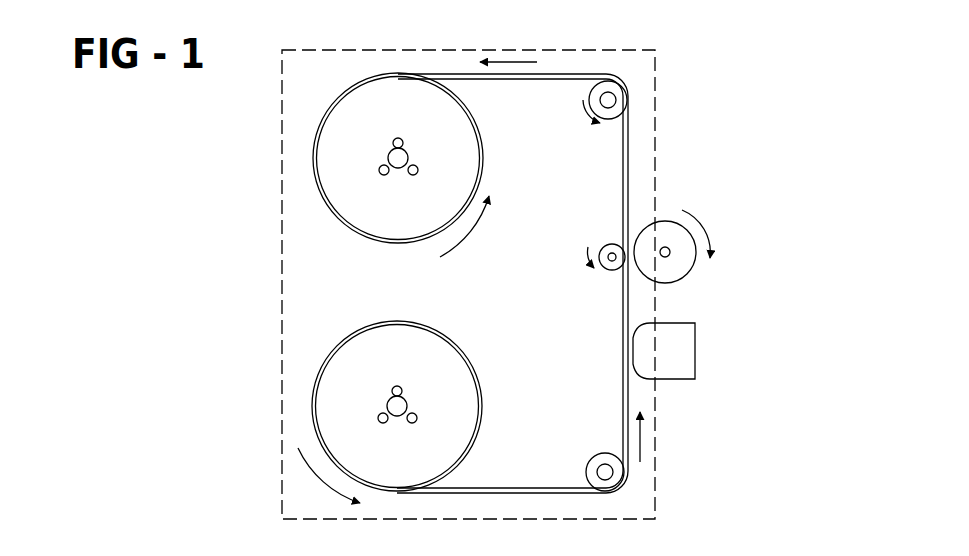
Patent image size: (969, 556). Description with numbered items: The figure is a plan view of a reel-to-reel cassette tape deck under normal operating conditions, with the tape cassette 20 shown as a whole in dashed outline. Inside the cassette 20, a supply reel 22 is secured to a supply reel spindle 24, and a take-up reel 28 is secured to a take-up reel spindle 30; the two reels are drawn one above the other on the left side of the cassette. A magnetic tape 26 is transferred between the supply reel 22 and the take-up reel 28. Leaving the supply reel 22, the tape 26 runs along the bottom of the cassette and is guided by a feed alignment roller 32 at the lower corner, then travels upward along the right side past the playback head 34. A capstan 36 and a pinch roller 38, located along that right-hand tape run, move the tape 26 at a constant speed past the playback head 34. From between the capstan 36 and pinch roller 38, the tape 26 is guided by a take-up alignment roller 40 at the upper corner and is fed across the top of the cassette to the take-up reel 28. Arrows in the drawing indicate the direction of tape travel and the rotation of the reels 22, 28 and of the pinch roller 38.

The tape cassette 20 is at (272, 200).
The supply reel 22 is at (346, 388).
The supply reel spindle 24 is at (397, 408).
The magnetic tape 26 is at (518, 486).
The take-up reel 28 is at (380, 208).
The take-up reel spindle 30 is at (405, 156).
The feed alignment roller 32 is at (617, 472).
The playback head 34 is at (695, 358).
The capstan 36 is at (613, 271).
The pinch roller 38 is at (668, 221).
The take-up alignment roller 40 is at (614, 118).